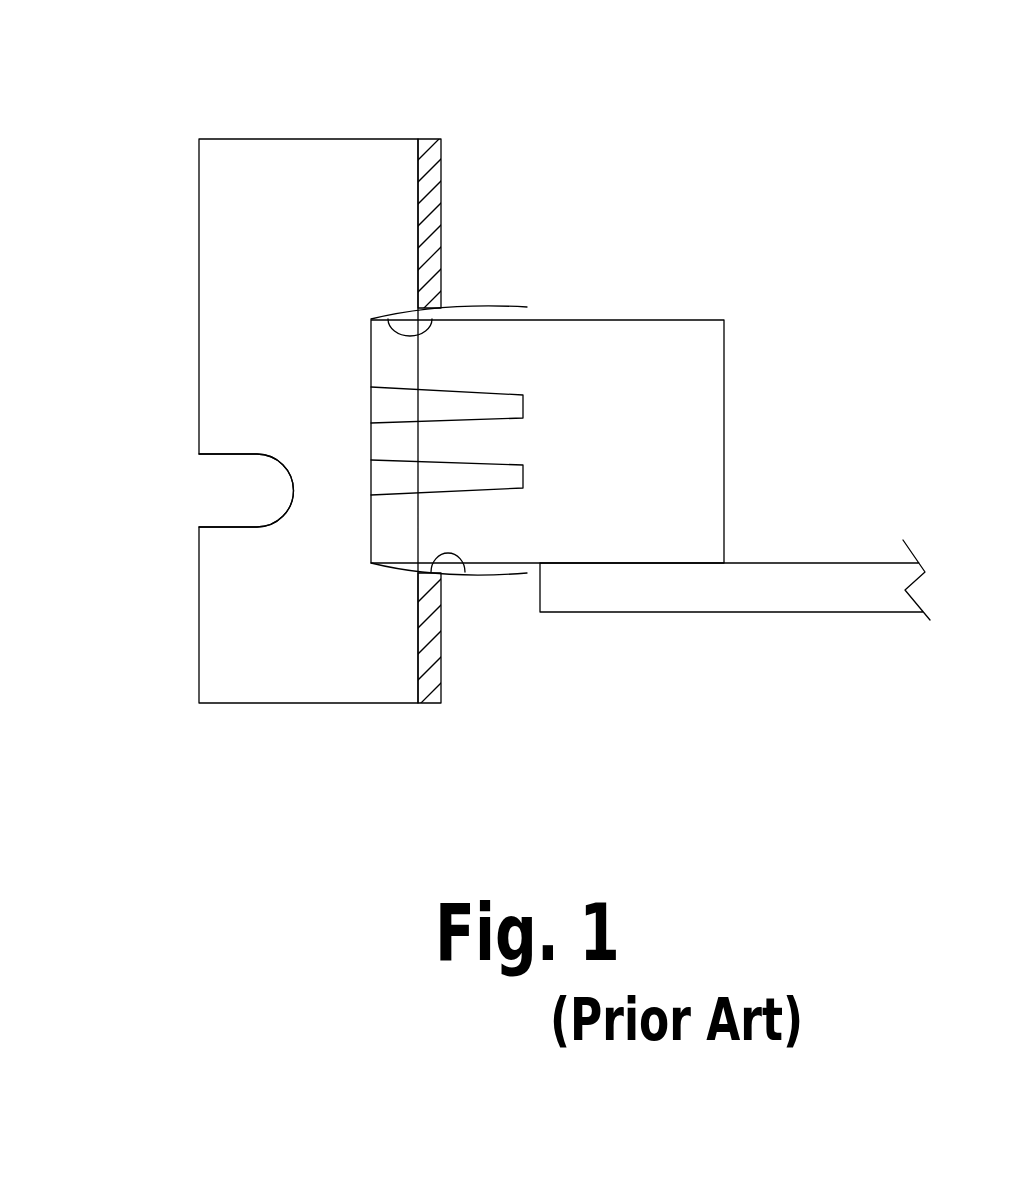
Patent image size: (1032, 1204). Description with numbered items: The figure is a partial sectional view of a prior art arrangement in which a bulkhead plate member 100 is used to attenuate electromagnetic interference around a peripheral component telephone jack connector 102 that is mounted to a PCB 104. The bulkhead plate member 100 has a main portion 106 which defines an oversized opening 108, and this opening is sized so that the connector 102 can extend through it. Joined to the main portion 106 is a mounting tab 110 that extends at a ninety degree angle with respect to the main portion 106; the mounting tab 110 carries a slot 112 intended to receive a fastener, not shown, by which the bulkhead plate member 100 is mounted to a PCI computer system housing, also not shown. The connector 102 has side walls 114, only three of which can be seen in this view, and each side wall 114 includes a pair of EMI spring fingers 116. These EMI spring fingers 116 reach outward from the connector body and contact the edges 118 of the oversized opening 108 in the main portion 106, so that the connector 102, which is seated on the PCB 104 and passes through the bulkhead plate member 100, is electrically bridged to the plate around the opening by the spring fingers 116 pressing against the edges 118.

The bulkhead plate member 100 is at (353, 130).
The RJ-45 peripheral component connector 102 is at (698, 317).
The PCB 104 is at (810, 612).
The main portion 106 is at (430, 185).
The oversized opening 108 is at (415, 575).
The mounting tab 110 is at (220, 558).
The slot 112 is at (230, 523).
The side walls 114 is at (632, 320).
The EMI spring fingers 116 is at (478, 307).
The edges 118 is at (393, 323).